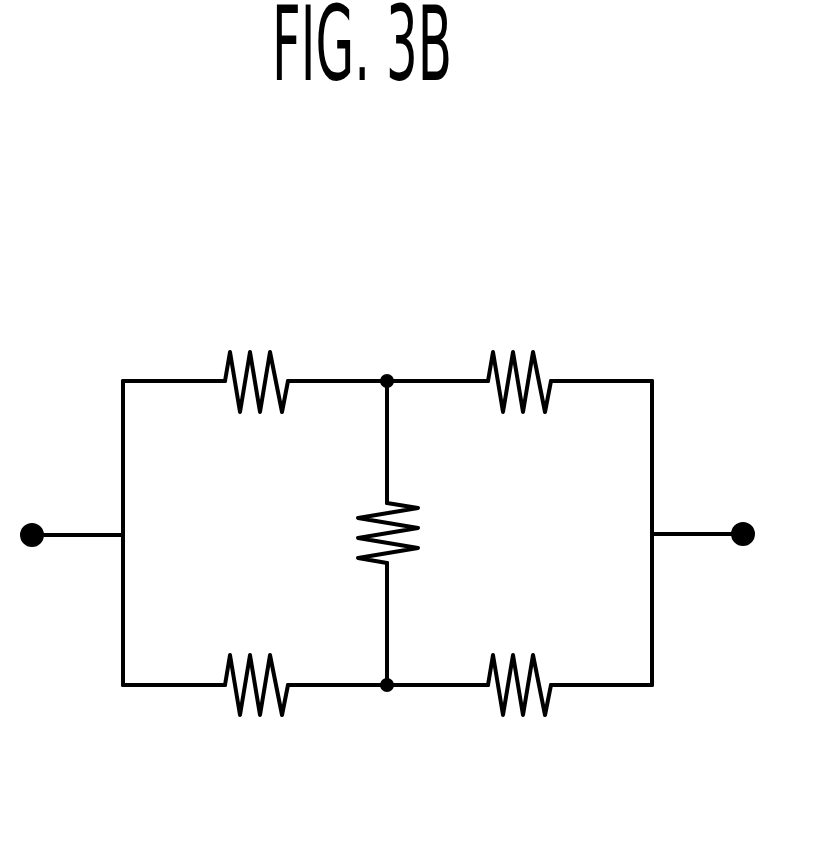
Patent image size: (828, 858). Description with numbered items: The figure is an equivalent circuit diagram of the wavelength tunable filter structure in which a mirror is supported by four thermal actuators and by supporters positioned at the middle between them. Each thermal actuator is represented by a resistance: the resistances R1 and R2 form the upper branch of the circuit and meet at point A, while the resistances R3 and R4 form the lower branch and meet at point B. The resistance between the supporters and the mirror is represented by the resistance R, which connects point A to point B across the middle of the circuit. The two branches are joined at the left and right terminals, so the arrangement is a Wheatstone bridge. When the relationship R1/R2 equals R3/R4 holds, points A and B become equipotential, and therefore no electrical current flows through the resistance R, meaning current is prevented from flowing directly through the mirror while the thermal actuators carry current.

The resistance of thermal actuator R1 is at (256, 412).
The resistance of thermal actuator R2 is at (519, 412).
The resistance of thermal actuator R3 is at (256, 715).
The resistance of thermal actuator R4 is at (519, 715).
The resistance between supporters and mirror R is at (401, 533).
The point A is at (387, 352).
The point B is at (387, 718).